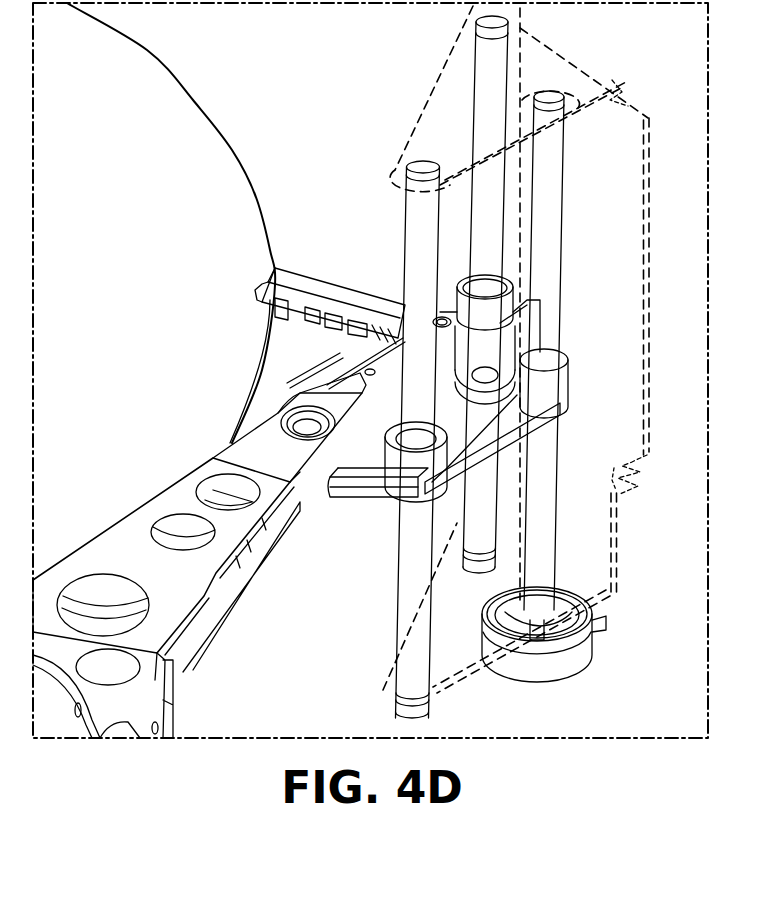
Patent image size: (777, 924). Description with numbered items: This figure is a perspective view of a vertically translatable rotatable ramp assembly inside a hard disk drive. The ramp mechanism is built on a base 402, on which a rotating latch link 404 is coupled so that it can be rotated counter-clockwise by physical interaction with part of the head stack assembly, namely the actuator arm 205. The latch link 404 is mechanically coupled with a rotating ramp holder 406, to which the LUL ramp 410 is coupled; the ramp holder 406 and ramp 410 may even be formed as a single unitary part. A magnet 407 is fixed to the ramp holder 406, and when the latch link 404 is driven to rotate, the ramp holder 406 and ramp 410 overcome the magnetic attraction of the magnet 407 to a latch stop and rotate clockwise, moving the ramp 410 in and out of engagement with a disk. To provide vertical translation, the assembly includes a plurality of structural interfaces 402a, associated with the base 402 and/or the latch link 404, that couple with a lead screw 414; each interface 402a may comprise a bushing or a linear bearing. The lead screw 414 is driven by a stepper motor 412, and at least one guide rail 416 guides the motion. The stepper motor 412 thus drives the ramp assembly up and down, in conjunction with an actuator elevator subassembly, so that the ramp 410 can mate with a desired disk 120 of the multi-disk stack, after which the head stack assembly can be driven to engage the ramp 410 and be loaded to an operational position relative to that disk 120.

The disk 120 is at (237, 348).
The actuator arm 205 is at (118, 548).
The LUL ramp 410 is at (303, 287).
The guide rail 416 is at (480, 190).
The lead screw 414 is at (552, 165).
The base 402 is at (520, 310).
The rotating ramp holder 406 is at (510, 350).
The magnet 407 is at (505, 303).
The structural interface 402a is at (560, 375).
The rotating latch link 404 is at (373, 487).
The stepper motor 412 is at (580, 660).